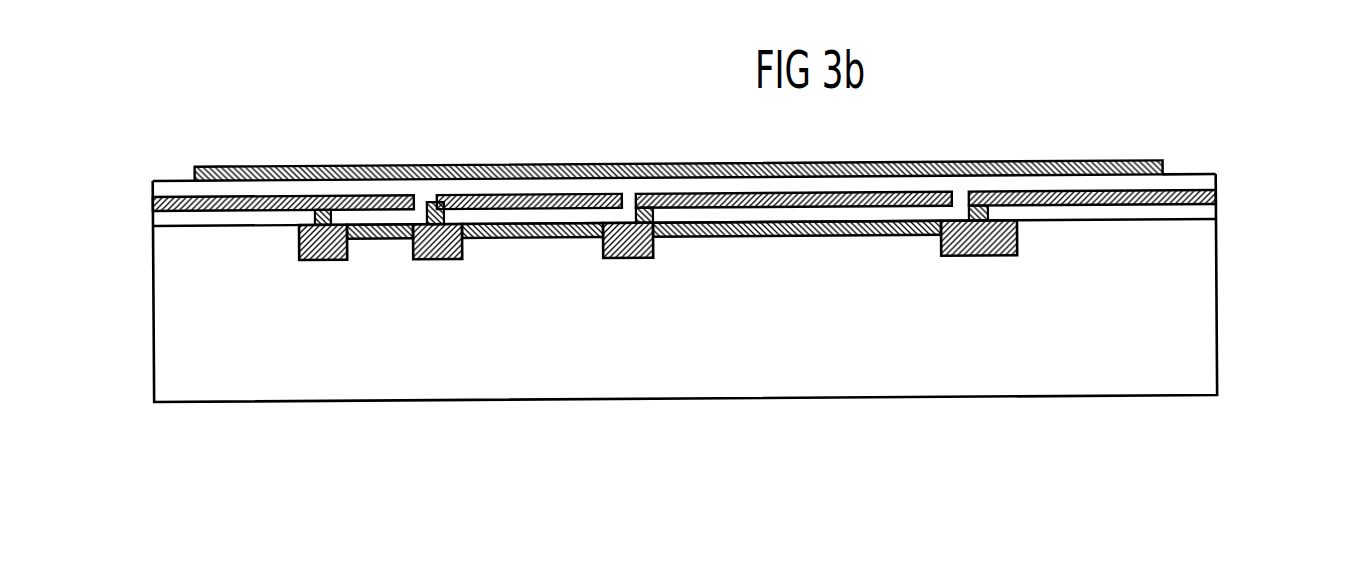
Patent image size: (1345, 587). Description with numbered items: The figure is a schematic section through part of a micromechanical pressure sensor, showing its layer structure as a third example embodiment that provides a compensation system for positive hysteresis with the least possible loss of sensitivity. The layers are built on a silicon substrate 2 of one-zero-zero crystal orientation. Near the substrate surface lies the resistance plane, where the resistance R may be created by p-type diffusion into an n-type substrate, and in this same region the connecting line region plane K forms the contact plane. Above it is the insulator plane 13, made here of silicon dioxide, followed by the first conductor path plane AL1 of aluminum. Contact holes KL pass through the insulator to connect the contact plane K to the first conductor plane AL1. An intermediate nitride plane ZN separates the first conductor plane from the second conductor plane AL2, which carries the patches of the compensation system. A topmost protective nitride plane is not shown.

The substrate 2 is at (1139, 364).
The insulator plane 13 is at (1162, 212).
The first conductor path plane AL1 is at (1217, 192).
The second conductor plane AL2 is at (1114, 160).
The intermediate nitride plane ZN is at (1193, 178).
The contact holes KL is at (322, 212).
The connecting line region plane K is at (325, 251).
The resistance R is at (385, 240).